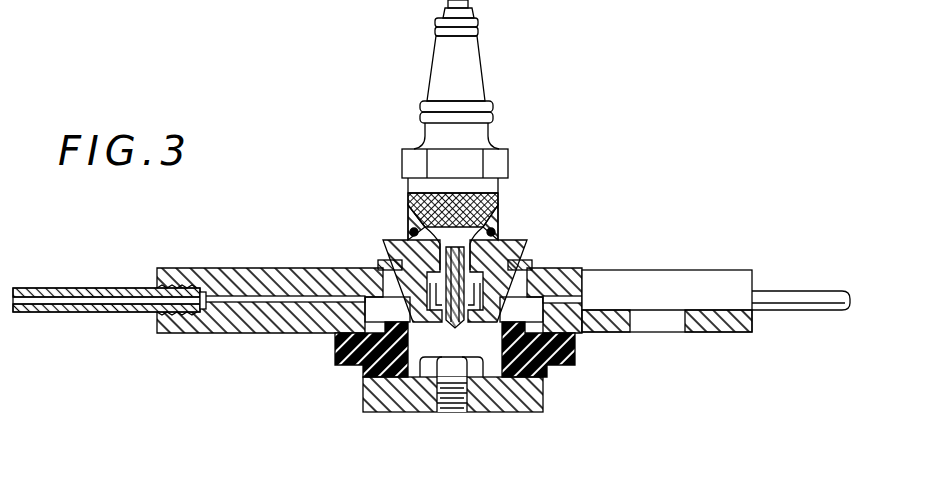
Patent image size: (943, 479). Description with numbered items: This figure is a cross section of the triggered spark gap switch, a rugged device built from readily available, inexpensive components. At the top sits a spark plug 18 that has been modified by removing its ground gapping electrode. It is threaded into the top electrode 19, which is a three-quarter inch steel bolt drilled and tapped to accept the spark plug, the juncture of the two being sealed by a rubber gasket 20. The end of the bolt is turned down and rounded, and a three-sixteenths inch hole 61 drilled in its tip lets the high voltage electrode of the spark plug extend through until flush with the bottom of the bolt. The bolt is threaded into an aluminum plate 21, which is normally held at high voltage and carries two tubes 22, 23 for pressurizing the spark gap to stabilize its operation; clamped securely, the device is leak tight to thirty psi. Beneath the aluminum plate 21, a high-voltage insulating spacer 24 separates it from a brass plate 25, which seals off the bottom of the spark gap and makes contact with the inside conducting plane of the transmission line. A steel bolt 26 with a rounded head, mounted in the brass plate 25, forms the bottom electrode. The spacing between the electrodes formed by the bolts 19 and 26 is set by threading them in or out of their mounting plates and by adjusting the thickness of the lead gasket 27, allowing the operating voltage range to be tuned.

The spark plug 18 is at (473, 72).
The top electrode 19 is at (383, 250).
The rubber gasket 20 is at (497, 230).
The aluminum plate 21 is at (712, 272).
The tube 22 is at (813, 312).
The tube 23 is at (112, 312).
The high-voltage insulating spacer 24 is at (575, 343).
The brass plate 25 is at (547, 397).
The steel bolt 26 is at (443, 409).
The lead gasket 27 is at (530, 267).
The hole 61 is at (463, 326).